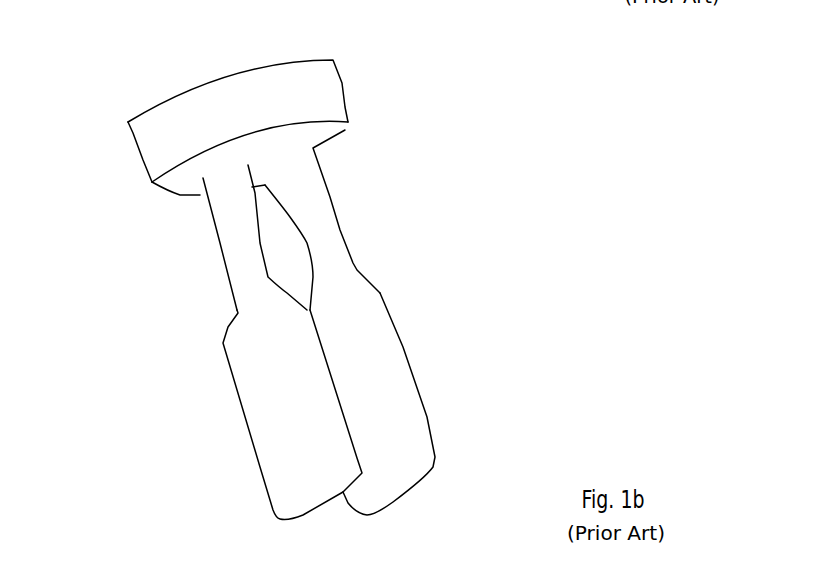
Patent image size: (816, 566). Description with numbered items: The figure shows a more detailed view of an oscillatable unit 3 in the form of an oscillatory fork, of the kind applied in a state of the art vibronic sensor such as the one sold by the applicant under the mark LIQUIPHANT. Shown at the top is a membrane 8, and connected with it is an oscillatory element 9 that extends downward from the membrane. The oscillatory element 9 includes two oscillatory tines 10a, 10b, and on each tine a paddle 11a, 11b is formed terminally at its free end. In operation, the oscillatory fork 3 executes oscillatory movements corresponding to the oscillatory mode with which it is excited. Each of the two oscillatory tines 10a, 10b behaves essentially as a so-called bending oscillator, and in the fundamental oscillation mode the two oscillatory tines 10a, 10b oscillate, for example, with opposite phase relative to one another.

The oscillatable unit 3 is at (112, 52).
The membrane 8 is at (322, 130).
The oscillatory element 9 is at (475, 157).
The oscillatory tine 10a is at (237, 247).
The oscillatory tine 10b is at (320, 204).
The paddle 11a is at (267, 392).
The paddle 11b is at (373, 363).